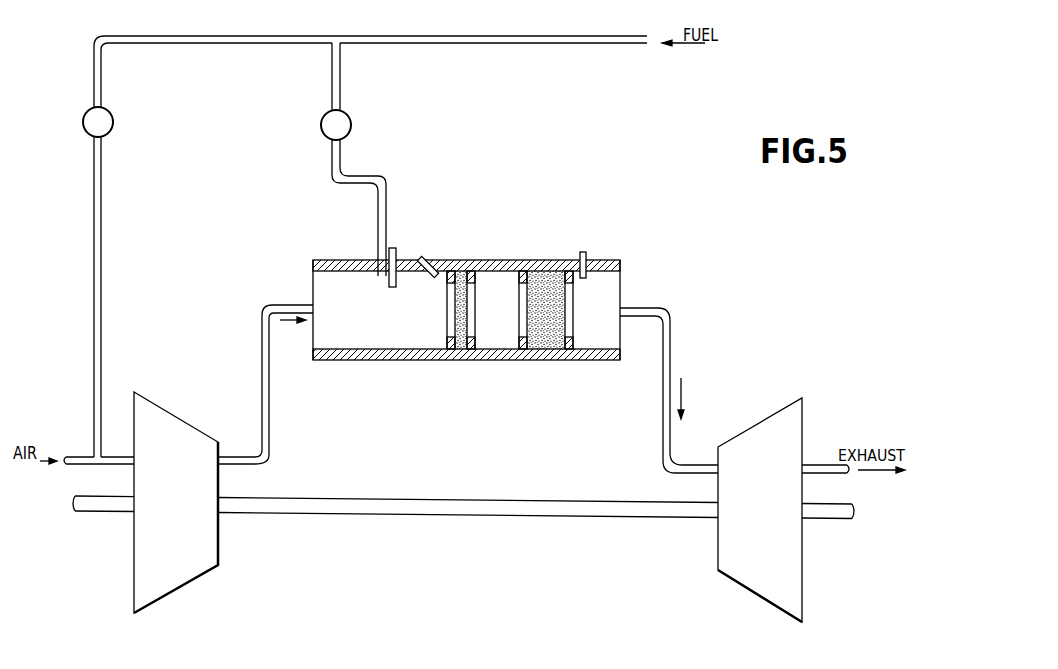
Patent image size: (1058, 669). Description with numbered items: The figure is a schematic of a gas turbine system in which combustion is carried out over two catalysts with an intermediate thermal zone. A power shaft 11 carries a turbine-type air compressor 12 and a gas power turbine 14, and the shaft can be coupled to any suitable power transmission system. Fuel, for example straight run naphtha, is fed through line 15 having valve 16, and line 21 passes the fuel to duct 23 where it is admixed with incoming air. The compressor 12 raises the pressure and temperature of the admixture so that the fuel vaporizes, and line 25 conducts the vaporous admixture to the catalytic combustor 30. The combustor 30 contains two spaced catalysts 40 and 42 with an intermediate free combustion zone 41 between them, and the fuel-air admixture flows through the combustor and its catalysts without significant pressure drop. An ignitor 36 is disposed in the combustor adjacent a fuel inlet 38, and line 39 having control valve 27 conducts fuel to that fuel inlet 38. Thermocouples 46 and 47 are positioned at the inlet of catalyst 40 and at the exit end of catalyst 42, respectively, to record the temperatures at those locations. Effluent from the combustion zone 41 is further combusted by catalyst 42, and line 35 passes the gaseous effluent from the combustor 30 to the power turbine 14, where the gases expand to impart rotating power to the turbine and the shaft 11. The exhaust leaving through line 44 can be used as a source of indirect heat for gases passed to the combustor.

The power shaft 11 is at (477, 500).
The air compressor 12 is at (208, 562).
The gas power turbine 14 is at (718, 571).
The fuel line 15 is at (527, 45).
The valve 16 is at (110, 124).
The fuel line 21 is at (101, 318).
The duct 23 is at (85, 466).
The line 25 is at (270, 443).
The control valve 27 is at (351, 125).
The catalytic combustor 30 is at (345, 364).
The line 35 is at (672, 352).
The ignitor 36 is at (395, 282).
The fuel inlet 38 is at (377, 240).
The line 39 is at (340, 70).
The catalyst 40 is at (457, 316).
The free combustion zone 41 is at (500, 340).
The catalyst 42 is at (554, 318).
The exhaust line 44 is at (818, 463).
The thermocouple 46 is at (423, 256).
The thermocouple 47 is at (588, 254).